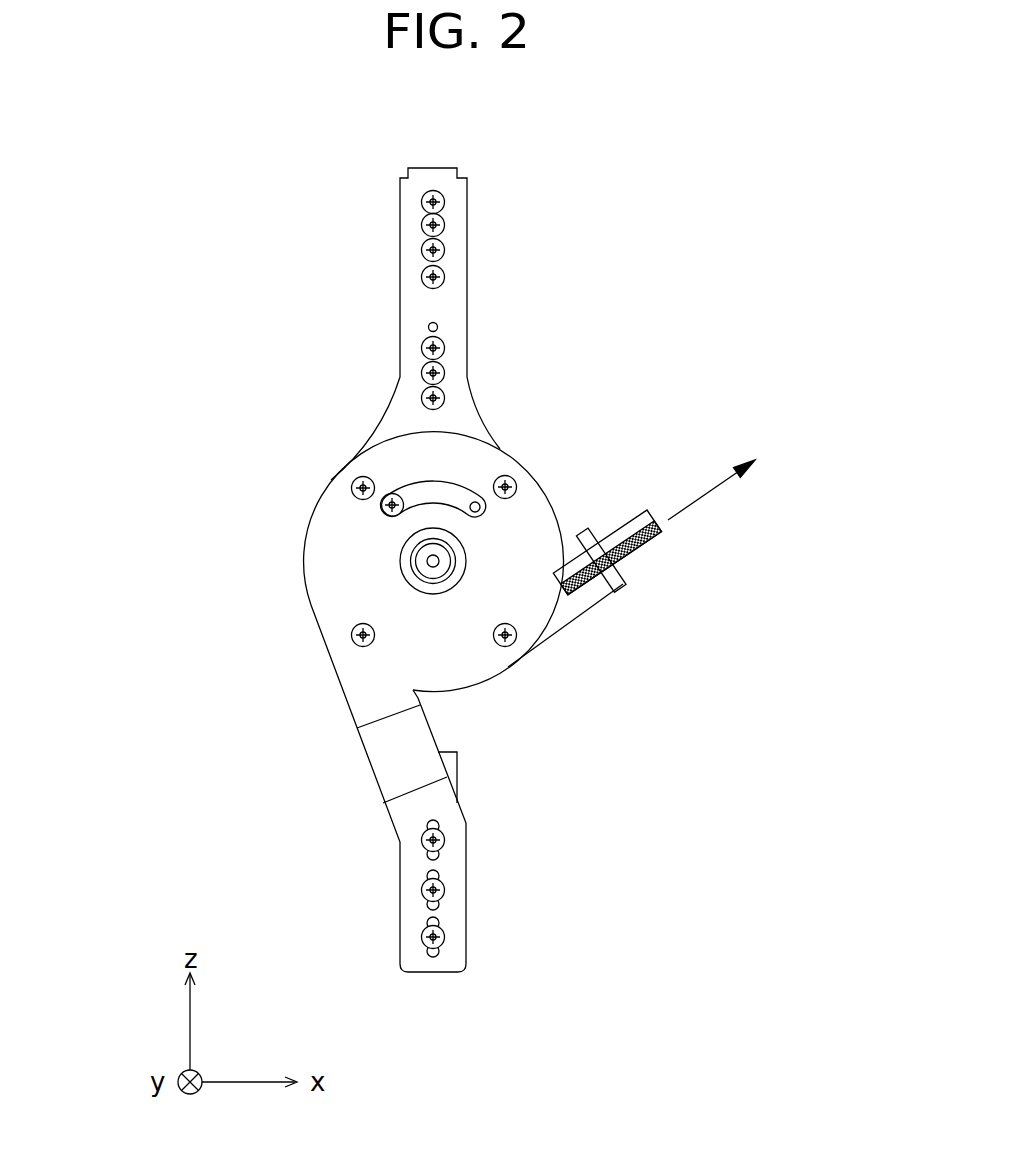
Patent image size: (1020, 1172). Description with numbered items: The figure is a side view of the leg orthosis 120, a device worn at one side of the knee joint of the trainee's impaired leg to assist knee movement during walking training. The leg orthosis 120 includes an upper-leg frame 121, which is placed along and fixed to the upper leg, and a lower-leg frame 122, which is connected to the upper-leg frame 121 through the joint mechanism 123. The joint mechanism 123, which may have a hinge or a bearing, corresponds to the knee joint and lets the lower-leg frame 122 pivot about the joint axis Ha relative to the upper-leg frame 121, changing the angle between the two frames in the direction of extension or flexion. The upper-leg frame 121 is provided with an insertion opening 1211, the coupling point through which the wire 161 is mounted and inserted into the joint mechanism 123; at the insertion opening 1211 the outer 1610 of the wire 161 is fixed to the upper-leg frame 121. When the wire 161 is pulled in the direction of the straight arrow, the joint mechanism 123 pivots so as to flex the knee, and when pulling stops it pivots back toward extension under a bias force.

The leg orthosis 120 is at (113, 180).
The upper-leg frame 121 is at (460, 310).
The lower-leg frame 122 is at (460, 914).
The joint mechanism 123 is at (382, 588).
The wire 161 is at (633, 535).
The outer 1610 is at (662, 538).
The insertion opening 1211 is at (623, 590).
The joint axis Ha is at (433, 561).